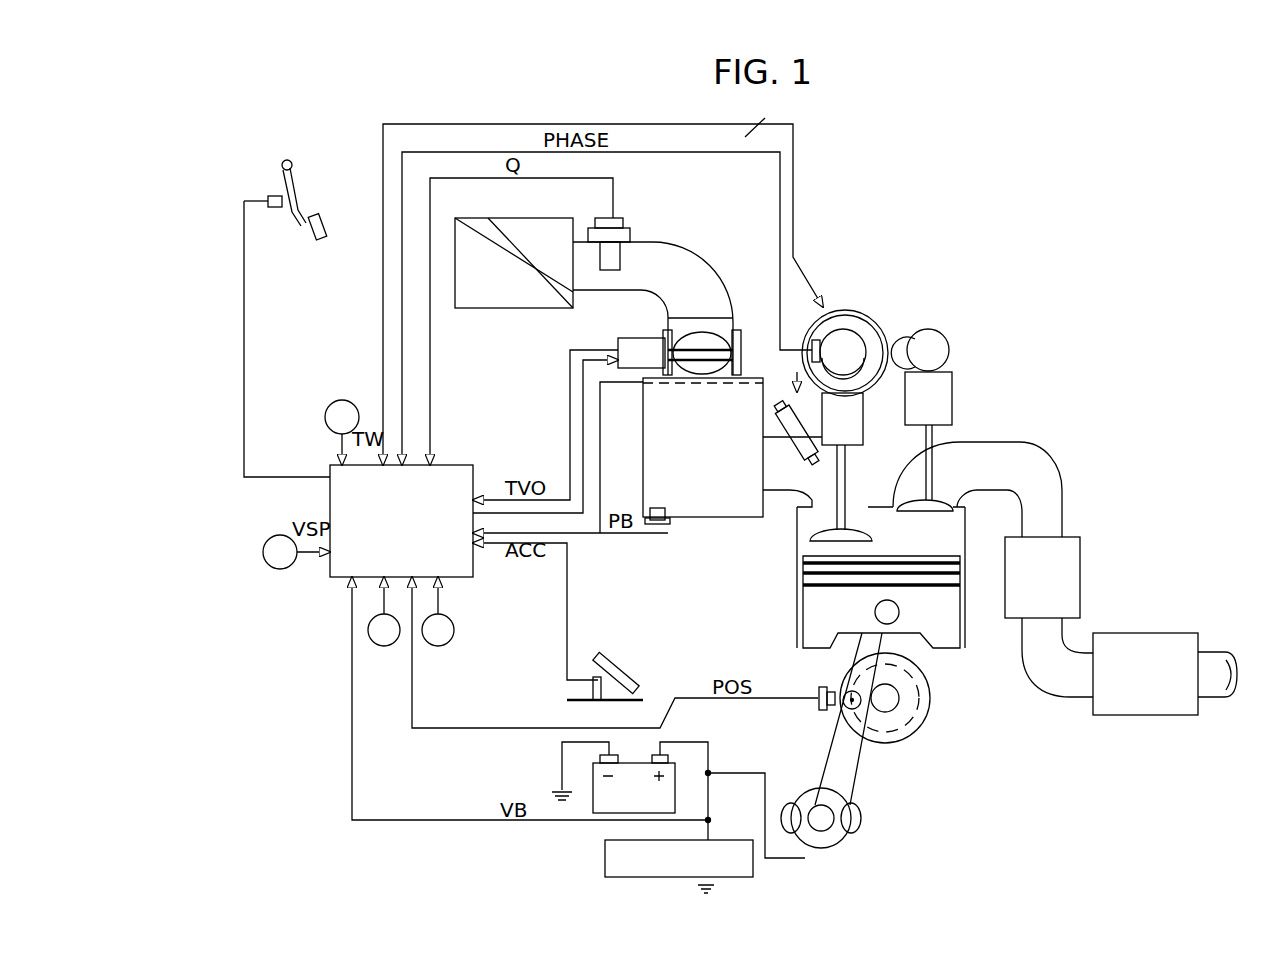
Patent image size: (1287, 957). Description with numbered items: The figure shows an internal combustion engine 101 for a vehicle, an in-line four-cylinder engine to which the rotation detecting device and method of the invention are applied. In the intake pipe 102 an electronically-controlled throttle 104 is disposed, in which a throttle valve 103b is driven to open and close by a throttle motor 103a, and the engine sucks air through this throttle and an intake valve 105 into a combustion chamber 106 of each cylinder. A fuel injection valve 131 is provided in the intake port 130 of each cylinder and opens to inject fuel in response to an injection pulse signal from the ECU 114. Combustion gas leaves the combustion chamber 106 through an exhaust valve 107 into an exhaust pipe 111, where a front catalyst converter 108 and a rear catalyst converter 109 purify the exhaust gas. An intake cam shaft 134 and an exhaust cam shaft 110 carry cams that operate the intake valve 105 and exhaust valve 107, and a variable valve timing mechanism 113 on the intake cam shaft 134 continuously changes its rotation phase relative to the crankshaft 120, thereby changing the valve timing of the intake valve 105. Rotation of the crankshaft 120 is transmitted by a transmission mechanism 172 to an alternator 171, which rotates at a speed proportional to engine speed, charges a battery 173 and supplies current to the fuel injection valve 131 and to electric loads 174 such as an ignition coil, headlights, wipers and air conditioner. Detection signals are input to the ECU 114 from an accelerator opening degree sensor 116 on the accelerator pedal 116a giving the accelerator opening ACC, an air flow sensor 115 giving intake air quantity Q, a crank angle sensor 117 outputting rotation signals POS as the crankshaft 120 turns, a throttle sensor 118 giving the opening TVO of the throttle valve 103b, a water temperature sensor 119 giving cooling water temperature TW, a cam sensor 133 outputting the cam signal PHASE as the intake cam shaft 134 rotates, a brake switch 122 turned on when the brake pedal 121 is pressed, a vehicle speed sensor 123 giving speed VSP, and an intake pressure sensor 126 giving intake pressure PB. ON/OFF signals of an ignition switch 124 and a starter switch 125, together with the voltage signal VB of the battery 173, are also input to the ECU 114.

The internal combustion engine 101 is at (787, 605).
The intake pipe 102 is at (683, 246).
The throttle motor 103a is at (645, 337).
The throttle valve 103b is at (705, 340).
The electronically-controlled throttle 104 is at (573, 333).
The intake valve 105 is at (843, 487).
The combustion chamber 106 is at (958, 550).
The exhaust valve 107 is at (935, 442).
The front catalyst converter 108 is at (1080, 548).
The rear catalyst converter 109 is at (1180, 633).
The exhaust cam shaft 110 is at (935, 337).
The exhaust pipe 111 is at (1030, 441).
The variable valve timing mechanism 113 is at (845, 306).
The ECU 114 is at (340, 578).
The air flow sensor 115 is at (618, 228).
The accelerator opening degree sensor 116 is at (592, 699).
The accelerator pedal 116a is at (636, 668).
The crank angle sensor 117 is at (820, 710).
The throttle sensor 118 is at (741, 362).
The water temperature sensor 119 is at (340, 400).
The crankshaft 120 is at (907, 690).
The brake pedal 121 is at (312, 240).
The brake switch 122 is at (270, 195).
The vehicle speed sensor 123 is at (282, 569).
The ignition switch 124 is at (384, 646).
The starter switch 125 is at (438, 646).
The intake pressure sensor 126 is at (661, 526).
The intake port 130 is at (806, 506).
The fuel injection valve 131 is at (793, 424).
The cam sensor 133 is at (812, 345).
The intake cam shaft 134 is at (848, 348).
The alternator 171 is at (835, 838).
The transmission mechanism 172 is at (857, 778).
The battery 173 is at (680, 796).
The electric loads 174 is at (753, 870).